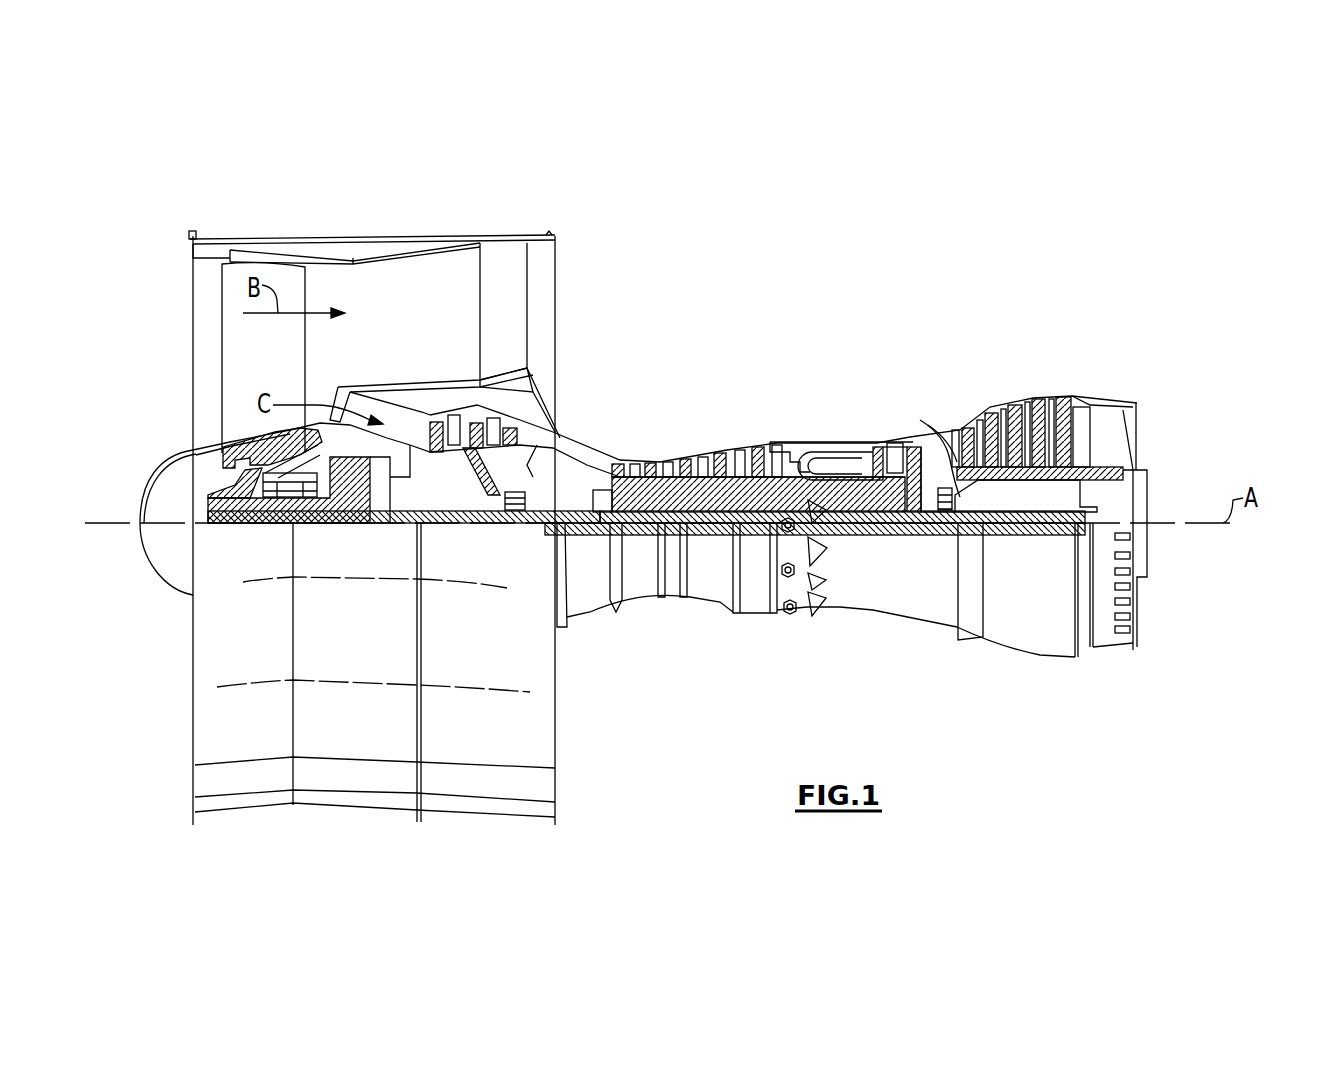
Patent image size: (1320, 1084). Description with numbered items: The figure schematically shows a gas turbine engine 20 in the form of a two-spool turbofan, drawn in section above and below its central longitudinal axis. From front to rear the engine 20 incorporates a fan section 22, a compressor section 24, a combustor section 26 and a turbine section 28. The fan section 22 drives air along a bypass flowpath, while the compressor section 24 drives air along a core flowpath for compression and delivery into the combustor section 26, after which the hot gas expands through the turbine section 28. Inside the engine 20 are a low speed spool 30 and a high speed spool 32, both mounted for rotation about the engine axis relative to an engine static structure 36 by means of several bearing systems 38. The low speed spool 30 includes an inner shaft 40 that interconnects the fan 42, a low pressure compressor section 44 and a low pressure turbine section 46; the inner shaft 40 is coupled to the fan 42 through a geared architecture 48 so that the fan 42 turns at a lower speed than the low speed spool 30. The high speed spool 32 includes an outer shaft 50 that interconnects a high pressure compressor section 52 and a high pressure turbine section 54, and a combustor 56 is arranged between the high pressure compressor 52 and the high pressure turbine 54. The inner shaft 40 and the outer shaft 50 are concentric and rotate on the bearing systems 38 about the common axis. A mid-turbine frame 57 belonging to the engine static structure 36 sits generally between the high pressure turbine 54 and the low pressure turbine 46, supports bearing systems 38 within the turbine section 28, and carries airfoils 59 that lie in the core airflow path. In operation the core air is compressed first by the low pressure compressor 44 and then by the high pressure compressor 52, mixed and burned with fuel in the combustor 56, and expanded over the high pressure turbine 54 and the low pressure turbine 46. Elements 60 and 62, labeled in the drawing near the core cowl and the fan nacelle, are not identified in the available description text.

The gas turbine engine 20 is at (842, 285).
The fan section 22 is at (303, 226).
The compressor section 24 is at (607, 428).
The combustor section 26 is at (830, 417).
The turbine section 28 is at (978, 380).
The low speed spool 30 is at (713, 540).
The high speed spool 32 is at (745, 470).
The engine static structure 36 is at (755, 622).
The bearing systems 38 is at (510, 498).
The inner shaft 40 is at (574, 527).
The fan 42 is at (280, 368).
The low pressure compressor section 44 is at (493, 425).
The low pressure turbine section 46 is at (1023, 402).
The geared architecture 48 is at (378, 498).
The outer shaft 50 is at (833, 507).
The high pressure compressor section 52 is at (688, 495).
The high pressure turbine section 54 is at (888, 443).
The combustor 56 is at (828, 466).
The mid-turbine frame 57 is at (940, 428).
The airfoils 59 is at (958, 488).
The core cowl 60 is at (560, 443).
The nacelle 62 is at (432, 240).